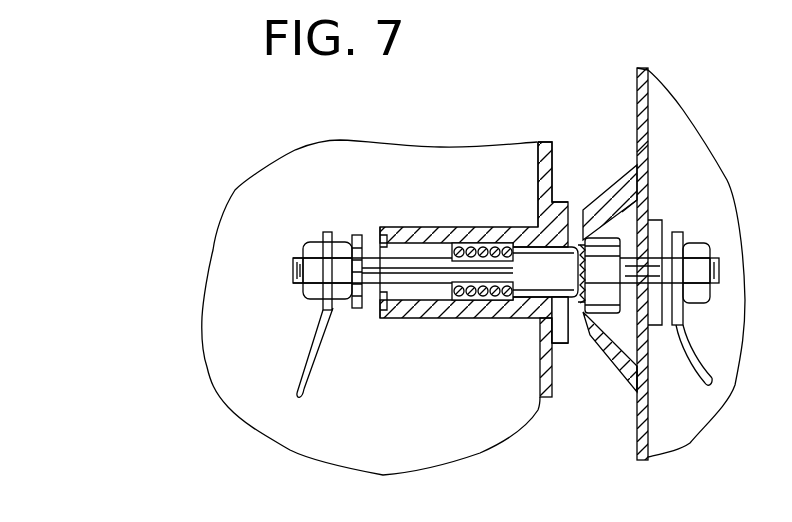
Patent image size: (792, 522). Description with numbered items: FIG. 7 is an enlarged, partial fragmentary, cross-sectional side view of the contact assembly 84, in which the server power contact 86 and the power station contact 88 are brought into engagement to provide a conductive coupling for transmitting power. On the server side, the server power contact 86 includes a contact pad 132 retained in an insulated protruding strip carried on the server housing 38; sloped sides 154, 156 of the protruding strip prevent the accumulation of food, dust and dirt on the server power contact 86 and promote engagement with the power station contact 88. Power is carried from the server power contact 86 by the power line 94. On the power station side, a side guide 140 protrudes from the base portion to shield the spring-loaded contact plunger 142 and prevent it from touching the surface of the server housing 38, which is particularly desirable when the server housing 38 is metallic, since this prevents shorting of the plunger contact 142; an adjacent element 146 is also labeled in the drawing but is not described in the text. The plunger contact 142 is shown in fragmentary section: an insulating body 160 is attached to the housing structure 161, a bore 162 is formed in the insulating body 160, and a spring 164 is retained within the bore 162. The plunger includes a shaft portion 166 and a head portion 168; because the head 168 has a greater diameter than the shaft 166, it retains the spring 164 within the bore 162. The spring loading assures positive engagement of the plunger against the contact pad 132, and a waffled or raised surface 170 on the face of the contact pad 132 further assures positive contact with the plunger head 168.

The server housing 38 is at (634, 88).
The contact assembly 84 is at (585, 419).
The server power contact 86 is at (618, 409).
The power station contact 88 is at (560, 382).
The power line 94 is at (693, 358).
The contact pad 132 is at (622, 205).
The side guide 140 is at (585, 205).
The spring-loaded contact plunger 142 is at (553, 281).
The mounting block 146 is at (553, 205).
The sloped side 154 is at (645, 149).
The sloped side 156 is at (617, 356).
The insulating body 160 is at (415, 223).
The housing structure 161 is at (298, 423).
The bore 162 is at (490, 243).
The spring 164 is at (467, 300).
The shaft portion 166 is at (420, 283).
The head portion 168 is at (531, 250).
The waffled or raised surface 170 is at (572, 247).